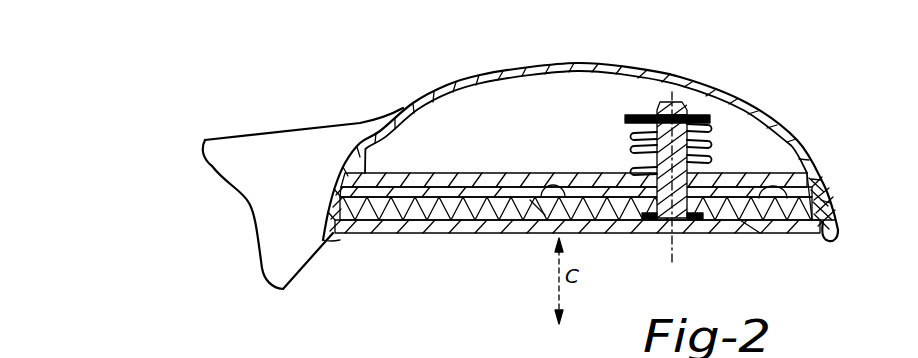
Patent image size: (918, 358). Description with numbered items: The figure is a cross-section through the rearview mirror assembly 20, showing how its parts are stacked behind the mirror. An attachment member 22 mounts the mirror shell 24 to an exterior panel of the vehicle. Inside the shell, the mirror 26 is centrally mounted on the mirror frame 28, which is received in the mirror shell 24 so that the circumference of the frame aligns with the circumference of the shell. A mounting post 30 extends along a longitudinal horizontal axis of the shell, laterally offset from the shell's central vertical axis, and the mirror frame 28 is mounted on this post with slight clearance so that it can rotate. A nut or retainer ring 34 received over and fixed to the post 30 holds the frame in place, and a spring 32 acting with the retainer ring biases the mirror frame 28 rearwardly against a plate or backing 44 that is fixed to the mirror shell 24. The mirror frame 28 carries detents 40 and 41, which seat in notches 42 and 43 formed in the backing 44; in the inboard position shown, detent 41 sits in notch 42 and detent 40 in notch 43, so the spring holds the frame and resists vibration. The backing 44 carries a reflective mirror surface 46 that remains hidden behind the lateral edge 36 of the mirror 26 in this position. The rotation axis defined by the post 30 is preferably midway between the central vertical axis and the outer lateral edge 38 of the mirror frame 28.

The rearview mirror assembly 20 is at (584, 215).
The attachment member 22 is at (248, 137).
The mirror shell 24 is at (578, 66).
The mirror 26 is at (443, 233).
The mirror frame 28 is at (618, 212).
The mounting post 30 is at (697, 143).
The spring 32 is at (640, 127).
The nut or retainer ring 34 is at (647, 113).
The lateral edge 36 is at (340, 217).
The outer lateral edge 38 is at (787, 222).
The detent 40 is at (745, 225).
The detent 41 is at (538, 225).
The notch 42 is at (553, 183).
The notch 43 is at (810, 170).
The plate or backing 44 is at (480, 180).
The reflective mirror surface 46 is at (420, 173).